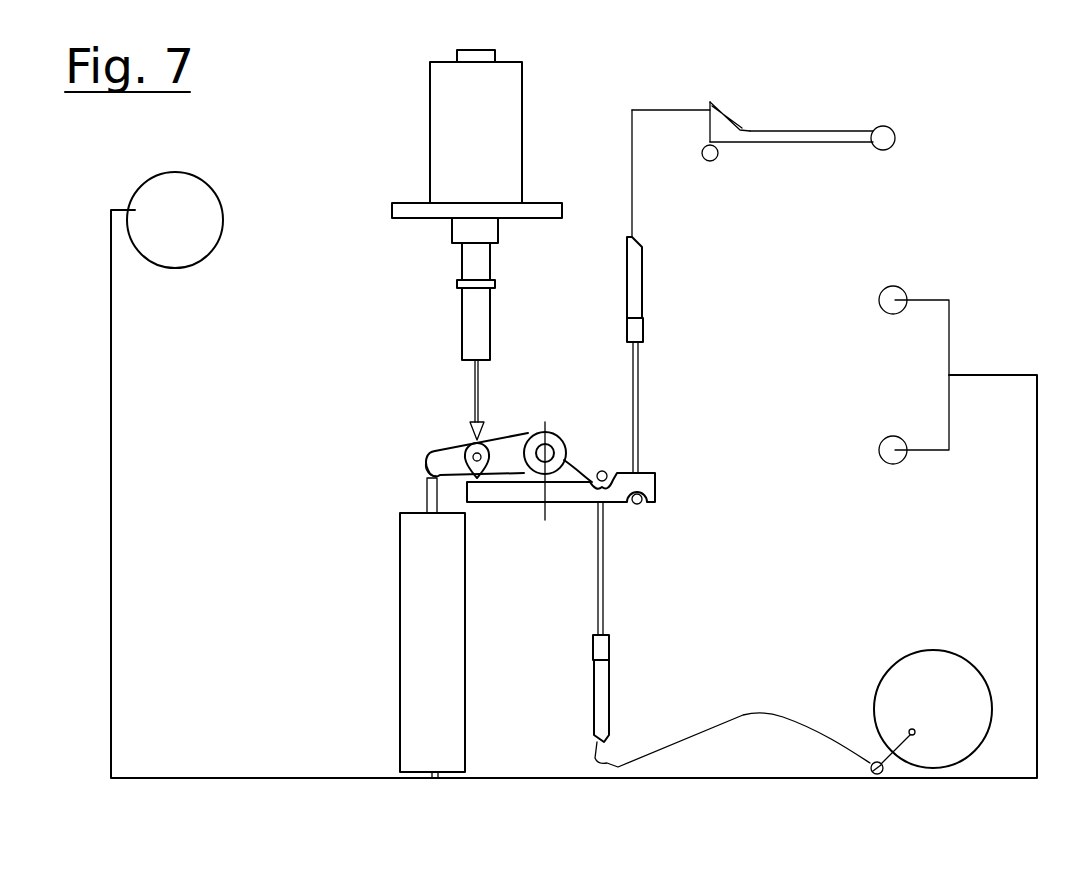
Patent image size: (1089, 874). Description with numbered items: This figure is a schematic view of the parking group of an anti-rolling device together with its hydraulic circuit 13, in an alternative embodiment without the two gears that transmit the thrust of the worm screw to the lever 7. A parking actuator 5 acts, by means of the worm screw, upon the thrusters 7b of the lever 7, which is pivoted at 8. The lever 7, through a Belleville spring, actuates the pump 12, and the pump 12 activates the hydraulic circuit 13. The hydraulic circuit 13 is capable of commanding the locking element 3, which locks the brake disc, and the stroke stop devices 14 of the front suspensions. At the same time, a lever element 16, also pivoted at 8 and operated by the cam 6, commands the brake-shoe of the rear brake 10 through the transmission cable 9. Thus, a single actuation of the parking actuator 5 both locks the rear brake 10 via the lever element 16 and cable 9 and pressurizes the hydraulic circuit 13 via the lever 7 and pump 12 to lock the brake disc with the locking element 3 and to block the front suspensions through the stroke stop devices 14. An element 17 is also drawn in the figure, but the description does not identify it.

The locking element 3 is at (200, 233).
The parking actuator 5 is at (513, 103).
The cam 6 is at (465, 478).
The lever 7 is at (435, 452).
The thrusters 7b is at (428, 465).
The pivot 8 is at (550, 450).
The transmission cable 9 is at (638, 395).
The rear brake 10 is at (922, 667).
The pump 12 is at (405, 613).
The hydraulic circuit 13 is at (113, 482).
The stroke stop devices 14 is at (880, 297).
The lever element 16 is at (563, 497).
The pointer lever 17 is at (813, 133).